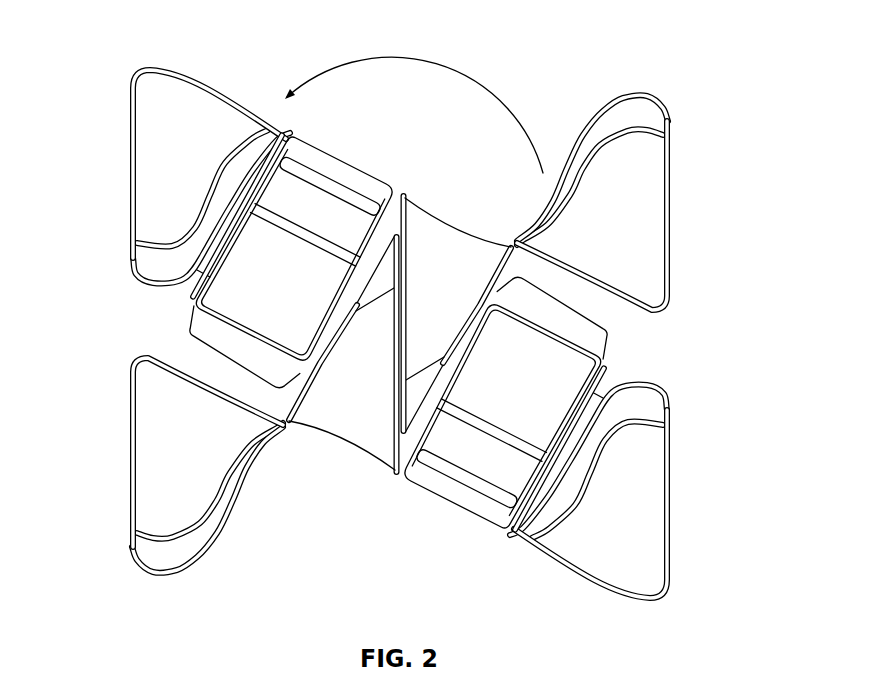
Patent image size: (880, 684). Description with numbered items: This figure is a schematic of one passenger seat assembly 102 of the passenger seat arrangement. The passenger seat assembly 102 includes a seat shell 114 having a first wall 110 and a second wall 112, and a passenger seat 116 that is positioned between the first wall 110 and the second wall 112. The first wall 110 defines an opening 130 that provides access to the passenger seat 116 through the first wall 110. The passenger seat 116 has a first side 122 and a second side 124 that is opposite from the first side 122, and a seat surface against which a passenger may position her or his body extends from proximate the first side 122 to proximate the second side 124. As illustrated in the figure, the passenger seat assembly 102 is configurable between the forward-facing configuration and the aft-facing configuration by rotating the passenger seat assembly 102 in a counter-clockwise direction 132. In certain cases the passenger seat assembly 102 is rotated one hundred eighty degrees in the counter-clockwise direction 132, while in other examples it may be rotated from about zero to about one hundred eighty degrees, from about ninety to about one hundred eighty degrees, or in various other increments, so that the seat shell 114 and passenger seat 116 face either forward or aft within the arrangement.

The passenger seat assembly 102 is at (693, 70).
The first wall 110 is at (401, 339).
The second wall 112 is at (395, 455).
The seat shell 114 is at (184, 93).
The passenger seat 116 is at (341, 177).
The first side 122 is at (256, 187).
The second side 124 is at (318, 343).
The opening 130 is at (140, 318).
The counter-clockwise direction 132 is at (501, 91).